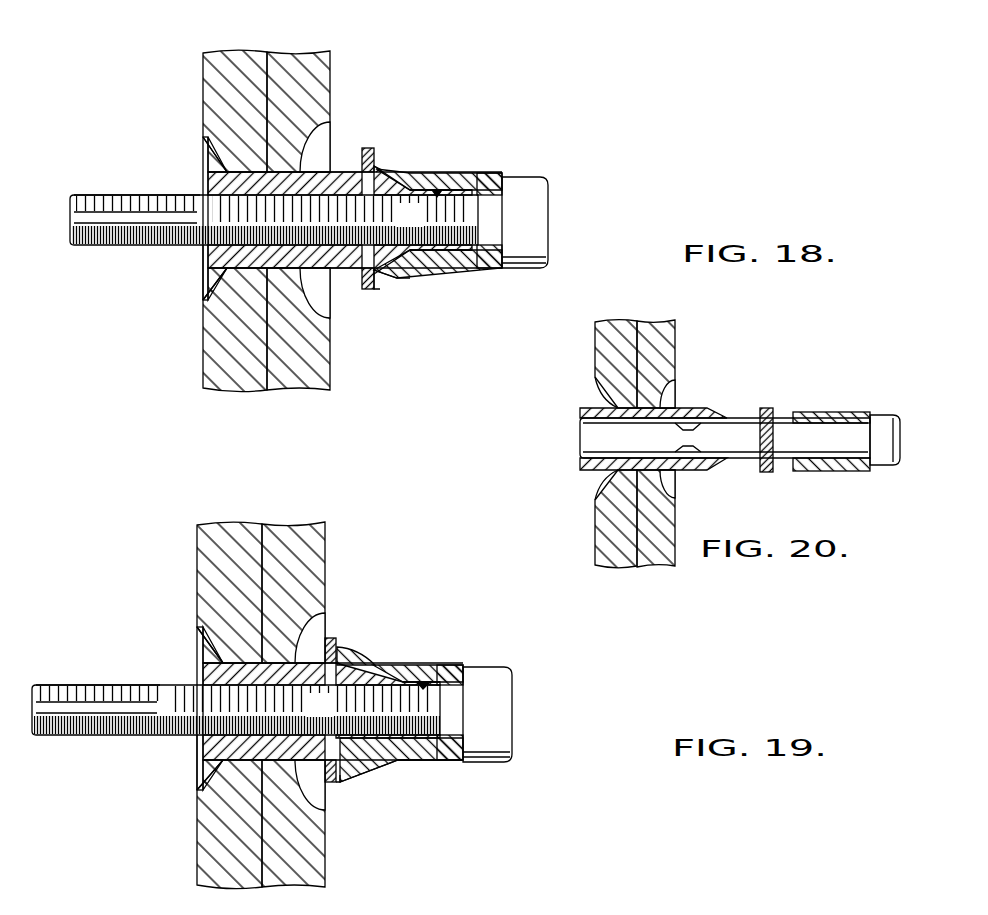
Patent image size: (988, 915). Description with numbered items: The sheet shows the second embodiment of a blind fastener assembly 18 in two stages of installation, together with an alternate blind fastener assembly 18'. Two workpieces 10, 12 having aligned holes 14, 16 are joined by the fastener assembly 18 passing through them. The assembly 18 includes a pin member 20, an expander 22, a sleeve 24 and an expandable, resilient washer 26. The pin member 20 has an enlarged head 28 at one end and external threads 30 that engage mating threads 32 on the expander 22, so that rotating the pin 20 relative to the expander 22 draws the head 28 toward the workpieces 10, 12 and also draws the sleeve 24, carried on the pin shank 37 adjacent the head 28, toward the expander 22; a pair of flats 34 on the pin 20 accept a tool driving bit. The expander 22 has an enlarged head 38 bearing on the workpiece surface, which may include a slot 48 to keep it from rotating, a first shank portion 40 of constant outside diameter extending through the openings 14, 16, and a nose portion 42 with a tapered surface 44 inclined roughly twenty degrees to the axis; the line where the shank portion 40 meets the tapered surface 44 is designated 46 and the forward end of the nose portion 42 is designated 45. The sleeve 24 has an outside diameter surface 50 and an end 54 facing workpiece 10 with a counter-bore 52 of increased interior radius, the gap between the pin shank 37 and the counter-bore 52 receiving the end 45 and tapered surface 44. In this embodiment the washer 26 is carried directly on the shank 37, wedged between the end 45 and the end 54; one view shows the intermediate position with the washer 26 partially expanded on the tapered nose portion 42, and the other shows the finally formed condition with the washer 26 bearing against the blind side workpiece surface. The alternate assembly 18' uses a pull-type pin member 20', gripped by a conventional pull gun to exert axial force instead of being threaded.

In FIG. 18, the workpiece 10 is at (312, 77).
In FIG. 19, the workpiece 10 is at (310, 552).
In FIG. 20, the workpiece 10 is at (660, 358).
In FIG. 18, the workpiece 12 is at (215, 88).
In FIG. 19, the workpiece 12 is at (210, 553).
In FIG. 20, the workpiece 12 is at (610, 362).
In FIG. 18, the hole 14 is at (305, 172).
In FIG. 19, the hole 14 is at (300, 663).
In FIG. 20, the hole 14 is at (660, 392).
In FIG. 18, the hole 16 is at (203, 113).
In FIG. 19, the hole 16 is at (202, 601).
In FIG. 20, the hole 16 is at (597, 378).
In FIG. 18, the blind fastener assembly 18 is at (355, 152).
In FIG. 19, the blind fastener assembly 18 is at (362, 642).
In FIG. 20, the blind fastener assembly 18' is at (725, 416).
In FIG. 18, the pin member 20 is at (274, 259).
In FIG. 19, the pin member 20 is at (236, 750).
In FIG. 20, the pin member 20' is at (709, 461).
In FIG. 18, the expander 22 is at (201, 283).
In FIG. 19, the expander 22 is at (193, 782).
In FIG. 18, the sleeve 24 is at (480, 172).
In FIG. 19, the sleeve 24 is at (477, 663).
In FIG. 18, the resilient washer 26 is at (366, 149).
In FIG. 19, the resilient washer 26 is at (334, 640).
In FIG. 18, the enlarged head 28 is at (530, 222).
In FIG. 19, the enlarged head 28 is at (490, 717).
In FIG. 20, the enlarged head 28 is at (883, 435).
In FIG. 18, the external threads 30 is at (88, 194).
In FIG. 19, the external threads 30 is at (70, 683).
In FIG. 18, the mating threads 32 is at (213, 173).
In FIG. 19, the mating threads 32 is at (203, 668).
In FIG. 18, the flats 34 is at (78, 215).
In FIG. 19, the flats 34 is at (38, 707).
In FIG. 18, the pin shank 37 is at (421, 227).
In FIG. 19, the pin shank 37 is at (331, 717).
In FIG. 18, the enlarged head 38 is at (203, 257).
In FIG. 19, the enlarged head 38 is at (197, 750).
In FIG. 18, the first shank portion 40 is at (358, 270).
In FIG. 19, the first shank portion 40 is at (333, 781).
In FIG. 18, the nose portion 42 is at (388, 270).
In FIG. 19, the nose portion 42 is at (397, 765).
In FIG. 18, the tapered surface 44 is at (390, 275).
In FIG. 19, the tapered surface 44 is at (383, 767).
In FIG. 18, the forward end 45 is at (408, 193).
In FIG. 19, the forward end 45 is at (417, 680).
In FIG. 18, the intersection line 46 is at (359, 172).
In FIG. 19, the intersection line 46 is at (373, 663).
In FIG. 18, the slot 48 is at (205, 147).
In FIG. 19, the slot 48 is at (197, 636).
In FIG. 18, the outside diameter surface 50 is at (472, 270).
In FIG. 19, the outside diameter surface 50 is at (450, 763).
In FIG. 18, the counter-bore 52 is at (443, 192).
In FIG. 19, the counter-bore 52 is at (425, 680).
In FIG. 18, the end 54 is at (382, 276).
In FIG. 19, the end 54 is at (340, 781).